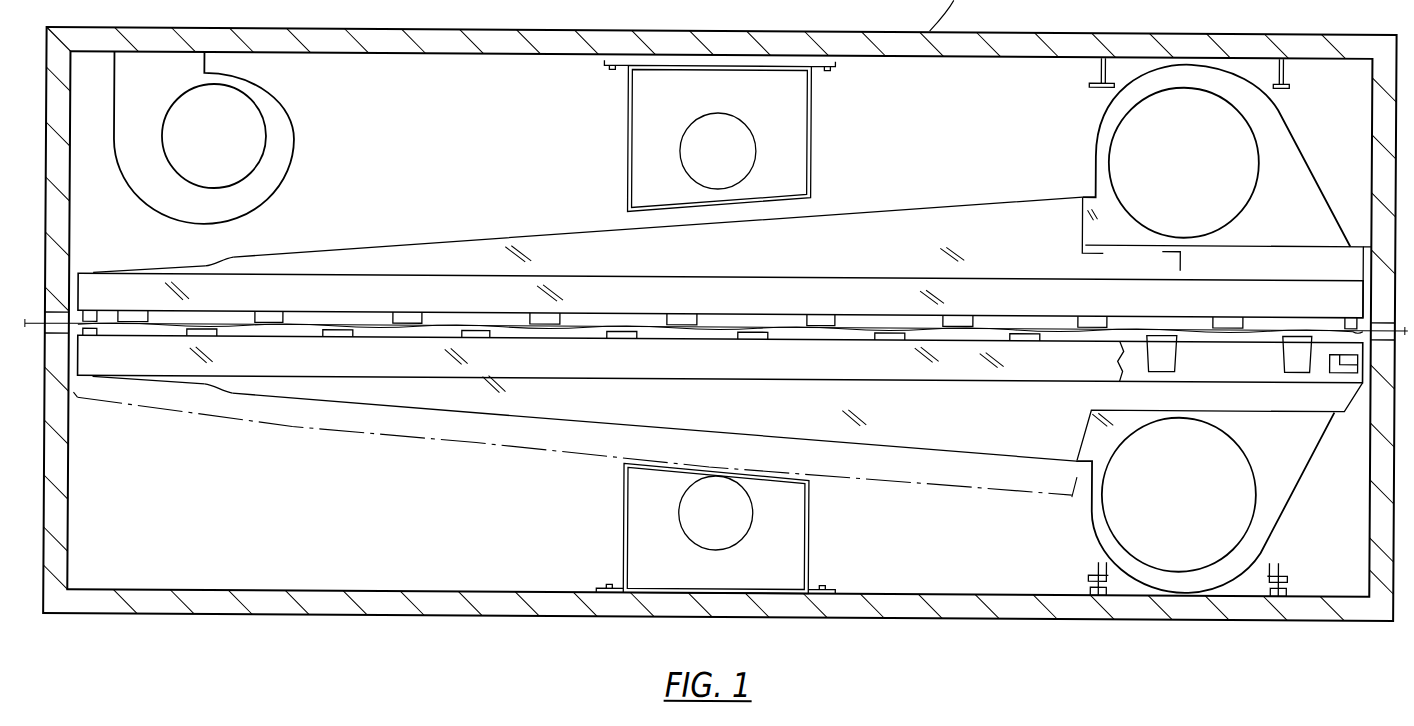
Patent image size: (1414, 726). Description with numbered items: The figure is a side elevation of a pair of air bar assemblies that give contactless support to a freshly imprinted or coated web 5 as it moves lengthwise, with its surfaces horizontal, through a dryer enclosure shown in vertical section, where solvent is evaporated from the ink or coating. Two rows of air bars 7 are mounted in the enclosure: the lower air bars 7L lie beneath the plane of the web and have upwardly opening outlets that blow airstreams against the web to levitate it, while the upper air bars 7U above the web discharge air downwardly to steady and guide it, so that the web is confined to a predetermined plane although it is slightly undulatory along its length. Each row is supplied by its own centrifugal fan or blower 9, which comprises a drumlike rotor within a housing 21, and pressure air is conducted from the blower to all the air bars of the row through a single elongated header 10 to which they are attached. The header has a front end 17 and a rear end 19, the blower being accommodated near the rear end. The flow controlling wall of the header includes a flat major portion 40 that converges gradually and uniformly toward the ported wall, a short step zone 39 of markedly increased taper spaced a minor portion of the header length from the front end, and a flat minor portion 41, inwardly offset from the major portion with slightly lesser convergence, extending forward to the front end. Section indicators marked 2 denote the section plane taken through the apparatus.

The section line 2- 2 is at (1087, 117).
The web 5 is at (1385, 322).
The air bars 7 is at (618, 334).
The upper air bars 7U is at (802, 314).
The lower air bars 7L is at (883, 334).
The centrifugal fan or blower 9 is at (1189, 327).
The header 10 is at (587, 335).
The front end of the header 17 is at (78, 397).
The rear end of the header 19 is at (1374, 240).
The blower housing 21 is at (1295, 123).
The step zone 39 is at (231, 256).
The major portion of the flow controlling wall 40 is at (325, 248).
The minor portion of the flow controlling wall 41 is at (161, 267).